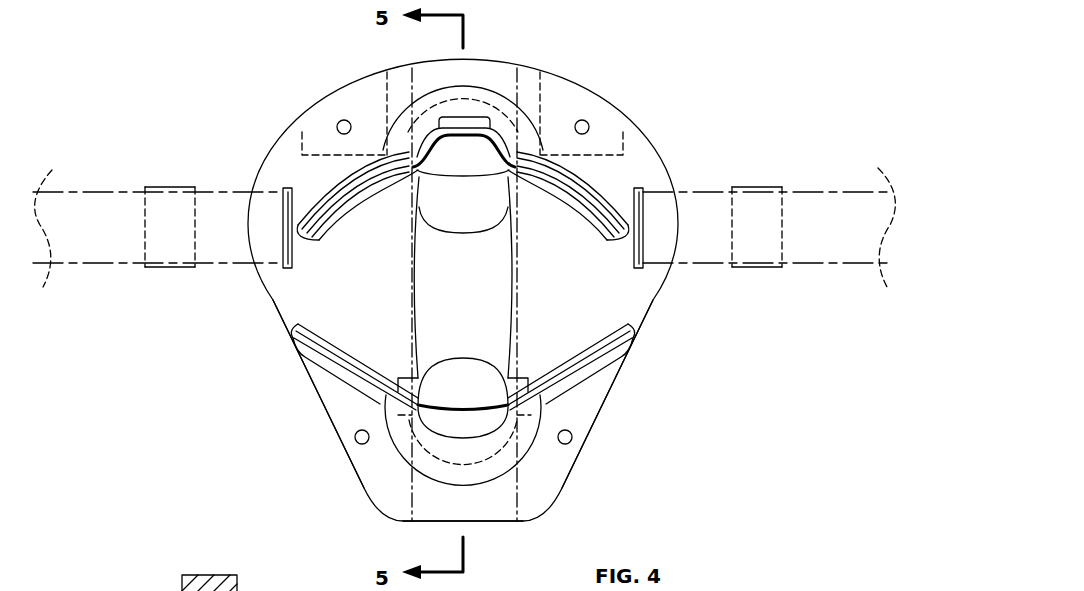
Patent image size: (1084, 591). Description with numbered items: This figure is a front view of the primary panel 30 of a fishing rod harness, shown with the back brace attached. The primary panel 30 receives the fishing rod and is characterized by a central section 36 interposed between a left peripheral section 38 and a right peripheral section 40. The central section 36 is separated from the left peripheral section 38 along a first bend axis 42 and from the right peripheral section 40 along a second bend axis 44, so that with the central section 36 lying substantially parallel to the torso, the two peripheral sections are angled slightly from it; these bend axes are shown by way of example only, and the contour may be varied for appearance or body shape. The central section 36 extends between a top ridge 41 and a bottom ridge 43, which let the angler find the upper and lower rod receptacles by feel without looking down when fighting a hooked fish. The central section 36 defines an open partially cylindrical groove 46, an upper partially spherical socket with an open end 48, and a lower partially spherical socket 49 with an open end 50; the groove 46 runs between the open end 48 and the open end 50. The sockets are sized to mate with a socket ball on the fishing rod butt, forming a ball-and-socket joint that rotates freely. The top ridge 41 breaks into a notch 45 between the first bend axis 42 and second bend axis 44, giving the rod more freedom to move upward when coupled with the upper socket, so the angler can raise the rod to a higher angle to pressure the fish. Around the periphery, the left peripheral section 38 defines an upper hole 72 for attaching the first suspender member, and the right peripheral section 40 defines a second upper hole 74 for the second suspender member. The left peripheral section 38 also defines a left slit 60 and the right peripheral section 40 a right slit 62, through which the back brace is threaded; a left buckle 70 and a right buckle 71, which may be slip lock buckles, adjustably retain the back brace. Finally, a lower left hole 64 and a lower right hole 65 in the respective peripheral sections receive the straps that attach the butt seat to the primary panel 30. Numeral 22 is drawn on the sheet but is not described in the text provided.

The strap base 22 is at (247, 583).
The primary panel 30 is at (540, 148).
The central section 36 is at (495, 507).
The left peripheral section 38 is at (302, 295).
The right peripheral section 40 is at (627, 300).
The top ridge 41 is at (600, 183).
The first bend axis 42 is at (412, 148).
The bottom ridge 43 is at (540, 403).
The second bend axis 44 is at (512, 130).
The notch 45 is at (463, 118).
The open partially cylindrical groove 46 is at (490, 310).
The open end of upper socket 48 is at (490, 212).
The lower partially spherical socket 49 is at (485, 423).
The open end of lower socket 50 is at (487, 373).
The left slit 60 is at (288, 188).
The right slit 62 is at (643, 190).
The lower left hole 64 is at (355, 443).
The lower right hole 65 is at (573, 442).
The left buckle 70 is at (163, 188).
The right buckle 71 is at (748, 187).
The upper hole 72 is at (339, 121).
The second upper hole 74 is at (586, 121).